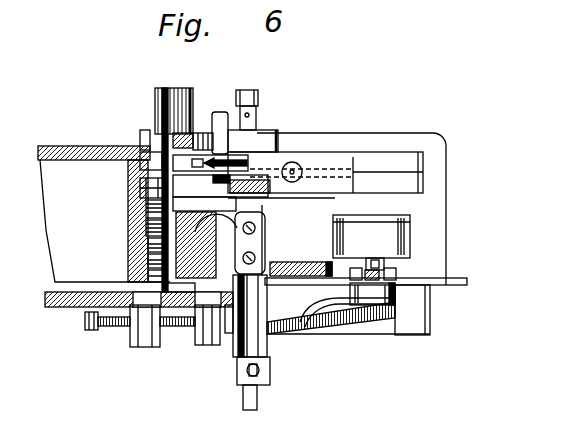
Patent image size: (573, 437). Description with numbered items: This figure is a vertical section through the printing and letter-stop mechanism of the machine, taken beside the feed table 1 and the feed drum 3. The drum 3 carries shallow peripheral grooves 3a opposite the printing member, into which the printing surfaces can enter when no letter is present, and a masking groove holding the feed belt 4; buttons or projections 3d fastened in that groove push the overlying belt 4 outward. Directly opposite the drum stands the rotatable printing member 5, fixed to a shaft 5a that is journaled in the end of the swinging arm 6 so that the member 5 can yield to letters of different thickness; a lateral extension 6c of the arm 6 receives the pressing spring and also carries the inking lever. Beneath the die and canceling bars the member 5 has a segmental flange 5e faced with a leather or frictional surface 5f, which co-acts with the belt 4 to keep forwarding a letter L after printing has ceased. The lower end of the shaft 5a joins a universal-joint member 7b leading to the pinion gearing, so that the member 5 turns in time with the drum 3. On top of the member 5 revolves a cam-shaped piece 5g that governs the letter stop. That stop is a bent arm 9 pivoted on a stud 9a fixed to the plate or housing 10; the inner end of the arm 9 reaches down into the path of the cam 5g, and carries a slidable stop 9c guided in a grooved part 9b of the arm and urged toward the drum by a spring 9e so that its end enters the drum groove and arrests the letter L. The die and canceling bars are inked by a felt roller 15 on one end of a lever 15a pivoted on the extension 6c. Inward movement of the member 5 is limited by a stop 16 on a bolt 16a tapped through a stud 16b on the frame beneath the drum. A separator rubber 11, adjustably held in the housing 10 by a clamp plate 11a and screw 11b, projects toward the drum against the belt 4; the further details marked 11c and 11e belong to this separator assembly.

The letter L is at (165, 136).
The feed table 1 is at (447, 282).
The feed drum 3 is at (55, 146).
The shallow peripheral grooves 3a is at (120, 228).
The buttons or projections 3d is at (138, 188).
The feed belt 4 is at (133, 193).
The rotatable printing member 5 is at (265, 245).
The shaft 5a is at (130, 255).
The segmental flange 5e is at (278, 268).
The leather or frictional surface 5f is at (357, 237).
The cam-shaped piece 5g is at (226, 184).
The swinging arm 6 is at (268, 330).
The lateral extension 6c is at (384, 305).
The universal-joint member 7b is at (258, 399).
The bent arm 9 is at (228, 118).
The stud 9a is at (253, 90).
The grooved part 9b is at (197, 153).
The slidable stop 9c is at (190, 157).
The spring 9e is at (226, 157).
The plate or housing 10 is at (440, 148).
The separator rubber 11 is at (163, 138).
The clamp plate 11a is at (335, 185).
The screw 11b is at (293, 170).
The rail block 11c is at (204, 206).
The rail end 11e is at (412, 185).
The felt roller 15 is at (402, 252).
The lever 15a is at (402, 272).
The stop 16 is at (215, 343).
The bolt 16a is at (108, 323).
The stud 16b is at (150, 345).